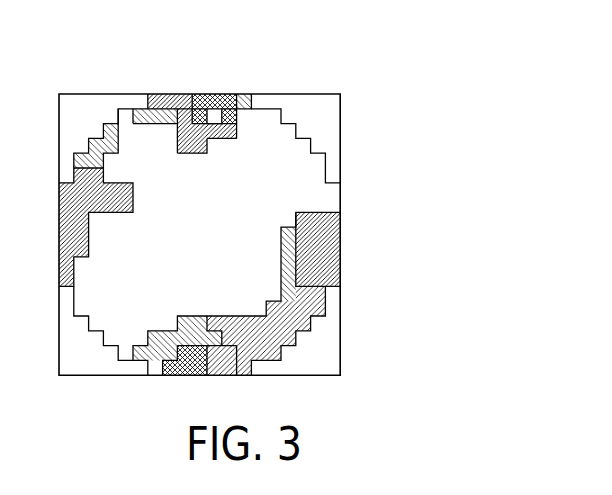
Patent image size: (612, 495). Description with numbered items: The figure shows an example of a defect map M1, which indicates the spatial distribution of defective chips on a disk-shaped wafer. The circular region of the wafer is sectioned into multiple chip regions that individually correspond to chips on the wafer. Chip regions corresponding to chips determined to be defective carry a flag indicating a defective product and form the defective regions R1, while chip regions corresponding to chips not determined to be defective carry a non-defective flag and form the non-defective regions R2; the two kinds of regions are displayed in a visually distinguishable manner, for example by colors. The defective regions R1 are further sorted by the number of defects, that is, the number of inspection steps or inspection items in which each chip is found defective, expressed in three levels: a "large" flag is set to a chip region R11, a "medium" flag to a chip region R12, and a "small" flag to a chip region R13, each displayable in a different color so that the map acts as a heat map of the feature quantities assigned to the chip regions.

The defect map M1 is at (307, 94).
The defective regions R1 is at (433, 233).
The non-defective regions R2 is at (298, 170).
The chip region R11 is at (197, 360).
The chip region R12 is at (337, 249).
The chip region R13 is at (322, 296).